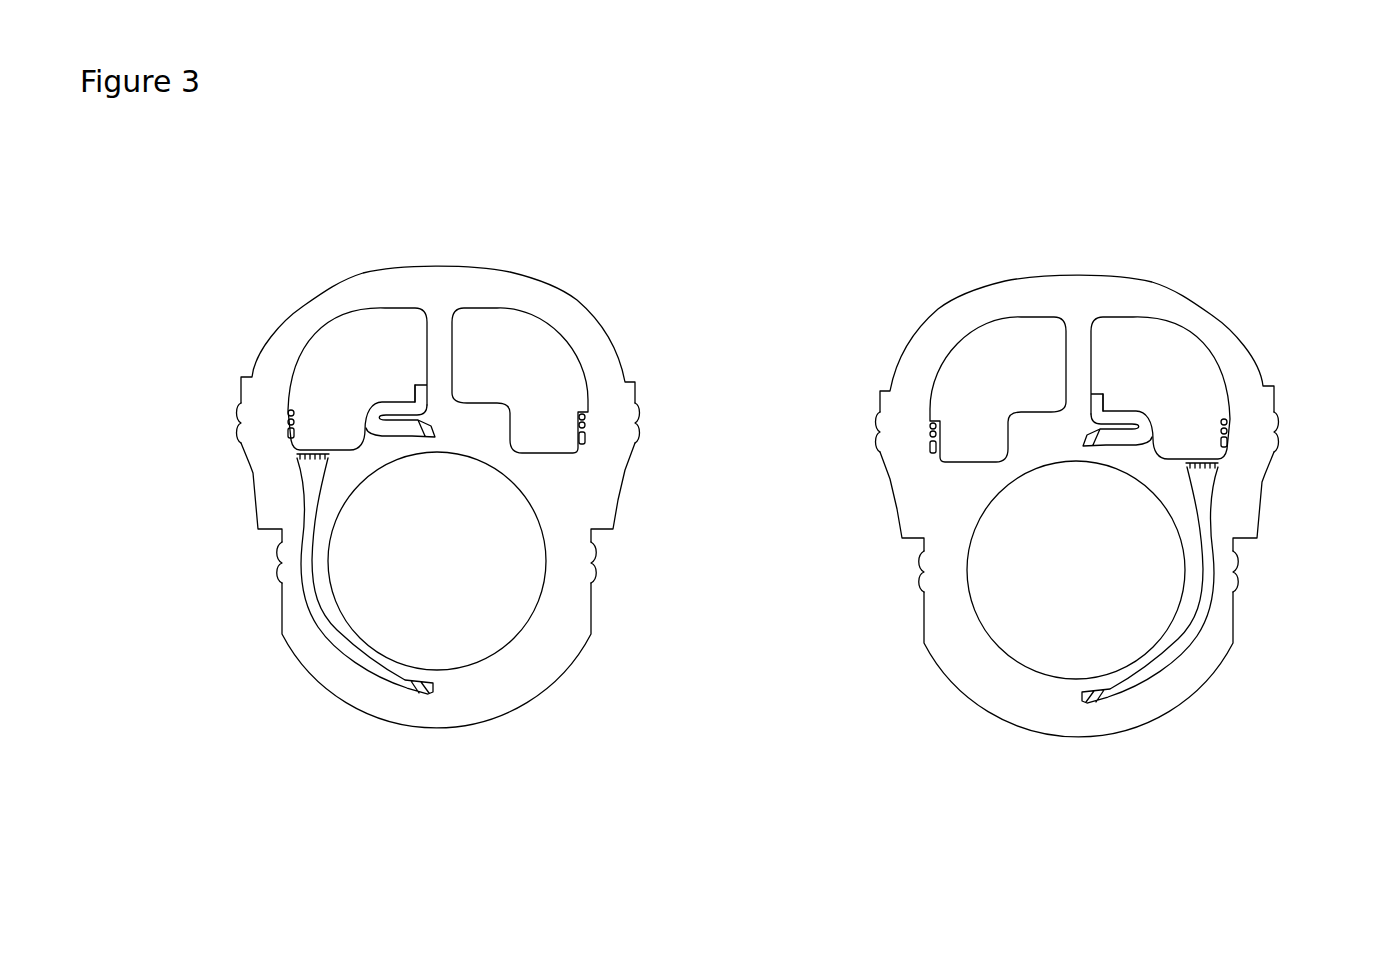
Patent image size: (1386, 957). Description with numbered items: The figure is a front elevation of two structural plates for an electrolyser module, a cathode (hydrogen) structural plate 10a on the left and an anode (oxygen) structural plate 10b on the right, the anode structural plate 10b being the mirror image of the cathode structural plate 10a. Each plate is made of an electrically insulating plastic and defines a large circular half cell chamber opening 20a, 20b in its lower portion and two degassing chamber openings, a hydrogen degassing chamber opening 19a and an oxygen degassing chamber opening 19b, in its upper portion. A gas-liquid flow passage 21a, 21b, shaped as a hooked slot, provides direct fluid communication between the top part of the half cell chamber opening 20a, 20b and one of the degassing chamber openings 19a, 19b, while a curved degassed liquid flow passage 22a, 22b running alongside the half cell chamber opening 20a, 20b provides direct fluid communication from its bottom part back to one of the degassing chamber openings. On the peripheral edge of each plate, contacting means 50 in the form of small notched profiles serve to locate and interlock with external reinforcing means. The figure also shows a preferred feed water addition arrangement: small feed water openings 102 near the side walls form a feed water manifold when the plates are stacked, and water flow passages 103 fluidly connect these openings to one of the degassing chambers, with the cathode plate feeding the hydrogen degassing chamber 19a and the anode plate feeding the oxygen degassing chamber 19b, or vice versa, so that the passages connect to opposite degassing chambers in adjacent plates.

The cathode structural plate 10a is at (573, 297).
The anode structural plate 10b is at (930, 317).
The hydrogen degassing chamber opening 19a is at (382, 350).
The oxygen degassing chamber opening 19b is at (517, 353).
The gas-liquid flow passage 21a is at (377, 398).
The gas-liquid flow passage 21b is at (1133, 408).
The feed water opening 102 is at (288, 421).
The water flow passage 103 is at (590, 418).
The contacting means 50 is at (275, 565).
The half cell chamber opening 20a is at (458, 585).
The half cell chamber opening 20b is at (1060, 587).
The degassed liquid flow passage 22a is at (363, 663).
The degassed liquid flow passage 22b is at (1157, 668).